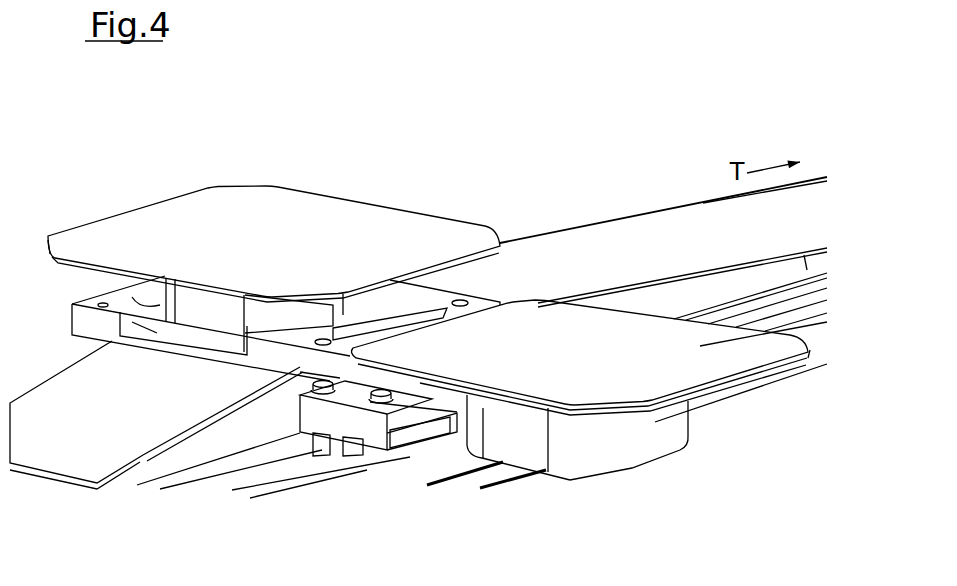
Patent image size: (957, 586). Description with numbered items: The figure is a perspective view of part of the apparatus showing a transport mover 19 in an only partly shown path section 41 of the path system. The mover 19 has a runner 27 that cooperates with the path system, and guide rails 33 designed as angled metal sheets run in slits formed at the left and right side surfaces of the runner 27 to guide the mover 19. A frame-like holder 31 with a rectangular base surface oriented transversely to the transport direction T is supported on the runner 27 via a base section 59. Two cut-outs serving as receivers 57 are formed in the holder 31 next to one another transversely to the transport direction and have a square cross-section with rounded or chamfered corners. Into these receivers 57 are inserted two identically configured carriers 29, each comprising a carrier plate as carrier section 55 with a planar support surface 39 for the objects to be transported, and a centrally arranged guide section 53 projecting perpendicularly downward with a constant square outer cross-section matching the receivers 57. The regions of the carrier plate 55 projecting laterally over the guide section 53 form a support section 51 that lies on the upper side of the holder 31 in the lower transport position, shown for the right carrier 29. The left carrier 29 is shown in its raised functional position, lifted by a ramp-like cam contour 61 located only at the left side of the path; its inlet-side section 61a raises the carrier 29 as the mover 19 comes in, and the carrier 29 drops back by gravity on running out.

The transport mover 19 is at (522, 199).
The runner 27 is at (318, 458).
The carrier 29 is at (150, 175).
The holder 31 is at (300, 370).
The guide rail 33 is at (190, 473).
The support surface 39 is at (233, 248).
The path section 41 is at (448, 468).
The support section 51 is at (91, 245).
The guide section 53 is at (277, 320).
The carrier section 55 is at (428, 267).
The receiver 57 is at (157, 303).
The base section 59 is at (372, 425).
The cam contour 61 is at (156, 455).
The section of the cam contour at the inlet side 61a is at (113, 405).